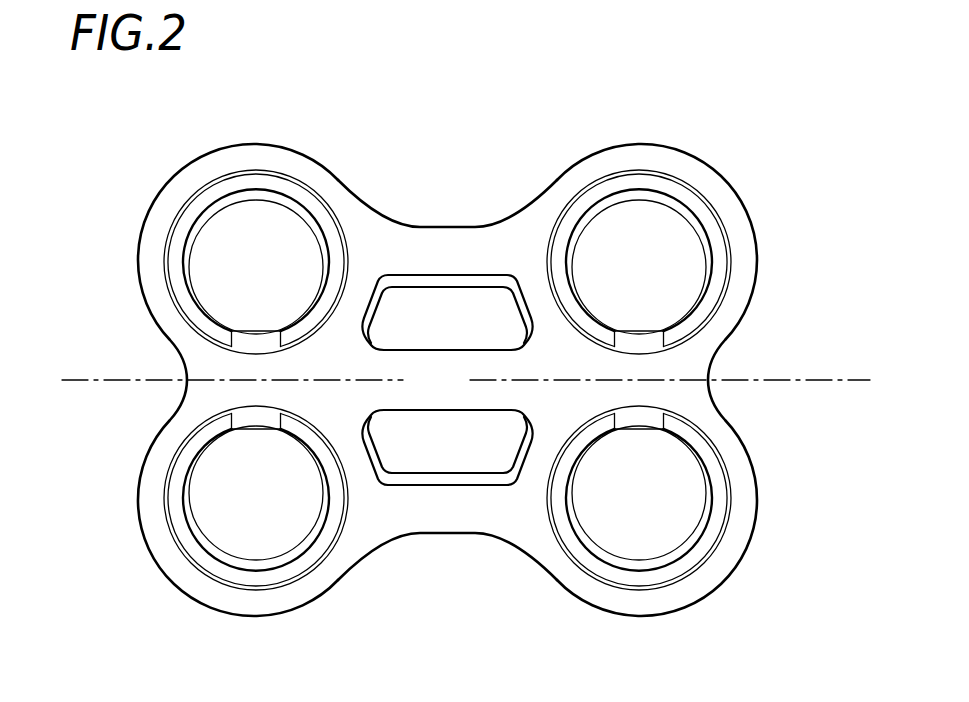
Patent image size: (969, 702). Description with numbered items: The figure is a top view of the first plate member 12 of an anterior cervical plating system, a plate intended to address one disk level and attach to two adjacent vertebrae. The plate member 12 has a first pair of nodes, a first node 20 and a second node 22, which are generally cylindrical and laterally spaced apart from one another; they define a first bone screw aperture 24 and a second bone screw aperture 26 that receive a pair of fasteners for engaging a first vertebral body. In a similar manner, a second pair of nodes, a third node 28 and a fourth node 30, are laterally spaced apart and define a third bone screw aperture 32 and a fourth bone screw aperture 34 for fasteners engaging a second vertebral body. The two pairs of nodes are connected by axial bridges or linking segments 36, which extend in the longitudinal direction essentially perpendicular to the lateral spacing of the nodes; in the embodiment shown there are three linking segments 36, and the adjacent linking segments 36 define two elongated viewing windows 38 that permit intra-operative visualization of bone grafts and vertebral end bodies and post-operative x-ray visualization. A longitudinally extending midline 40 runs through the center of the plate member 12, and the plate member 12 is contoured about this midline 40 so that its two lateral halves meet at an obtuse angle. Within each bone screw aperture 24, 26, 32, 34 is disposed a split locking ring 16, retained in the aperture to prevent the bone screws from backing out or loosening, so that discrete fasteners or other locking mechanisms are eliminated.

The first plate member 12 is at (616, 96).
The locking ring 16 is at (178, 222).
The first node 20 is at (216, 167).
The second node 22 is at (163, 450).
The first bone screw aperture 24 is at (280, 197).
The second bone screw aperture 26 is at (285, 555).
The third node 28 is at (669, 168).
The fourth node 30 is at (723, 553).
The third bone screw aperture 32 is at (690, 216).
The fourth bone screw aperture 34 is at (675, 440).
The linking segment 36 is at (423, 247).
The elongated viewing window 38 is at (456, 284).
The longitudinally extending midline 40 is at (77, 381).